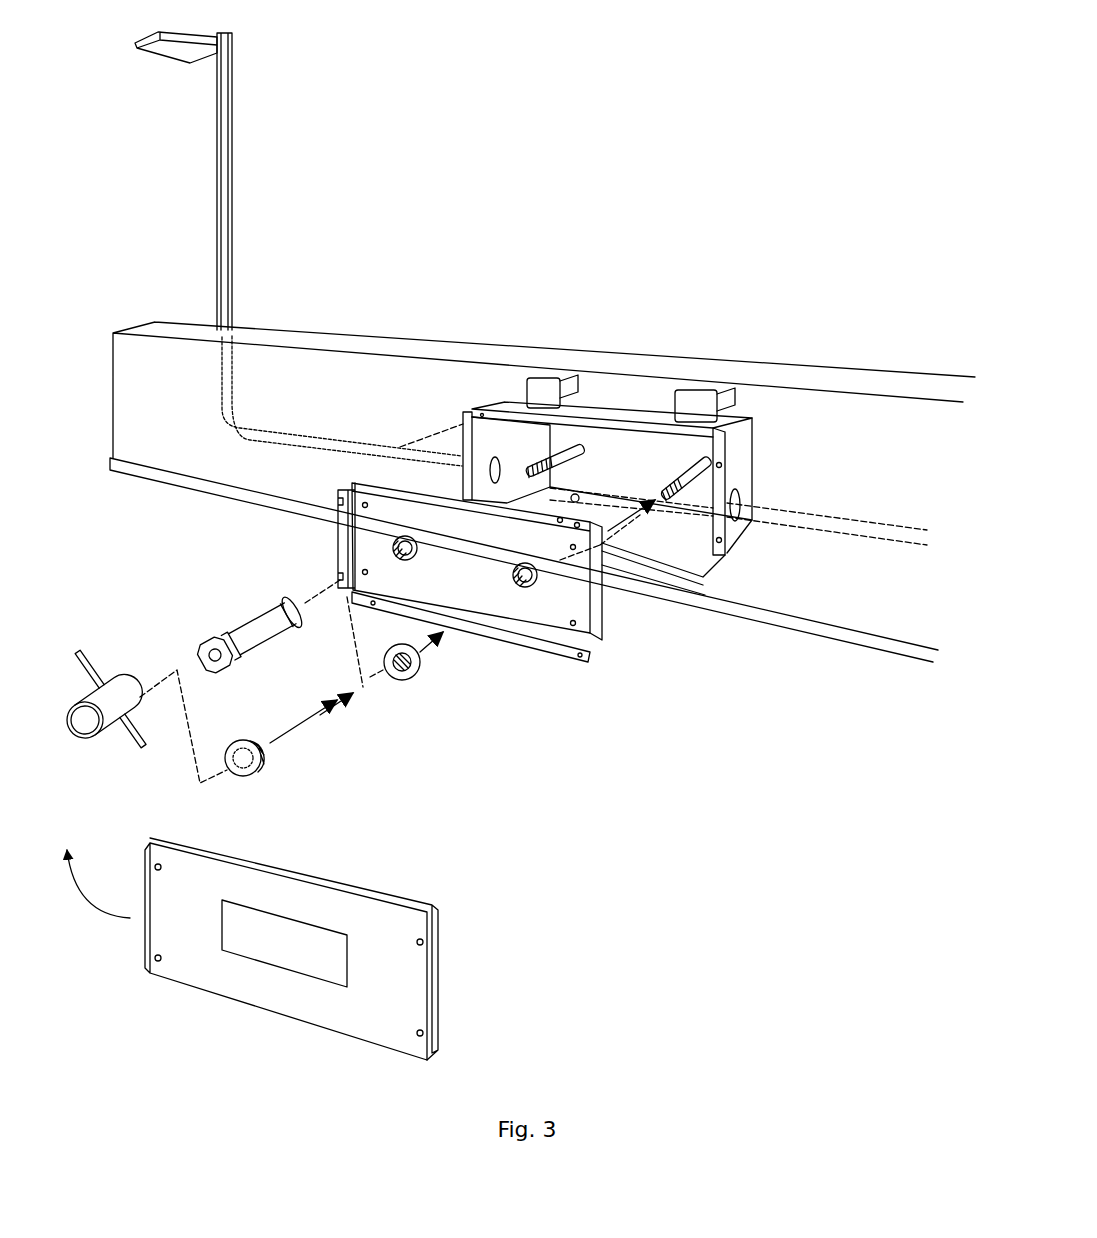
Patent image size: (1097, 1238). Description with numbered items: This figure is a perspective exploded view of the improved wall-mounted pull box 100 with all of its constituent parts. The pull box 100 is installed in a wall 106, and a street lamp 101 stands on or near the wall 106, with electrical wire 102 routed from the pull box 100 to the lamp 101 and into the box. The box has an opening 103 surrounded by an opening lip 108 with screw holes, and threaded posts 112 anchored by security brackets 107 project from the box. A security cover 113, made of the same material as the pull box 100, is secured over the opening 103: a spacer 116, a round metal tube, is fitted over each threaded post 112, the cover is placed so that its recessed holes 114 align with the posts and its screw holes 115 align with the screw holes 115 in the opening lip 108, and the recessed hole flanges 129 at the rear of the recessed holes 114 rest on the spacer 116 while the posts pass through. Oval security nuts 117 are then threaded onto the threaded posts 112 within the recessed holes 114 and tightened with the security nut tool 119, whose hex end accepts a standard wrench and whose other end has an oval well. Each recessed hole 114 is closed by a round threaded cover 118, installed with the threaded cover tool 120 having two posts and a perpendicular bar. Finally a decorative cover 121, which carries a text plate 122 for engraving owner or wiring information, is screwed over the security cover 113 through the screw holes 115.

The pull box 100 is at (617, 383).
The street lamp 101 is at (243, 217).
The electrical wire 102 is at (282, 434).
The opening 103 is at (644, 543).
The wall 106 is at (180, 432).
The security brackets 107 is at (538, 396).
The opening lip 108 is at (478, 410).
The threaded posts 112 is at (522, 477).
The security cover 113 is at (521, 618).
The recessed hole 114 is at (397, 549).
The screw holes 115 is at (713, 556).
The spacer 116 is at (464, 614).
The security nuts 117 is at (399, 669).
The threaded cover 118 is at (258, 768).
The security nut tool 119 is at (250, 614).
The threaded cover tool 120 is at (113, 680).
The decorative cover 121 is at (271, 978).
The text plate 122 is at (243, 931).
The flange 129 is at (400, 538).